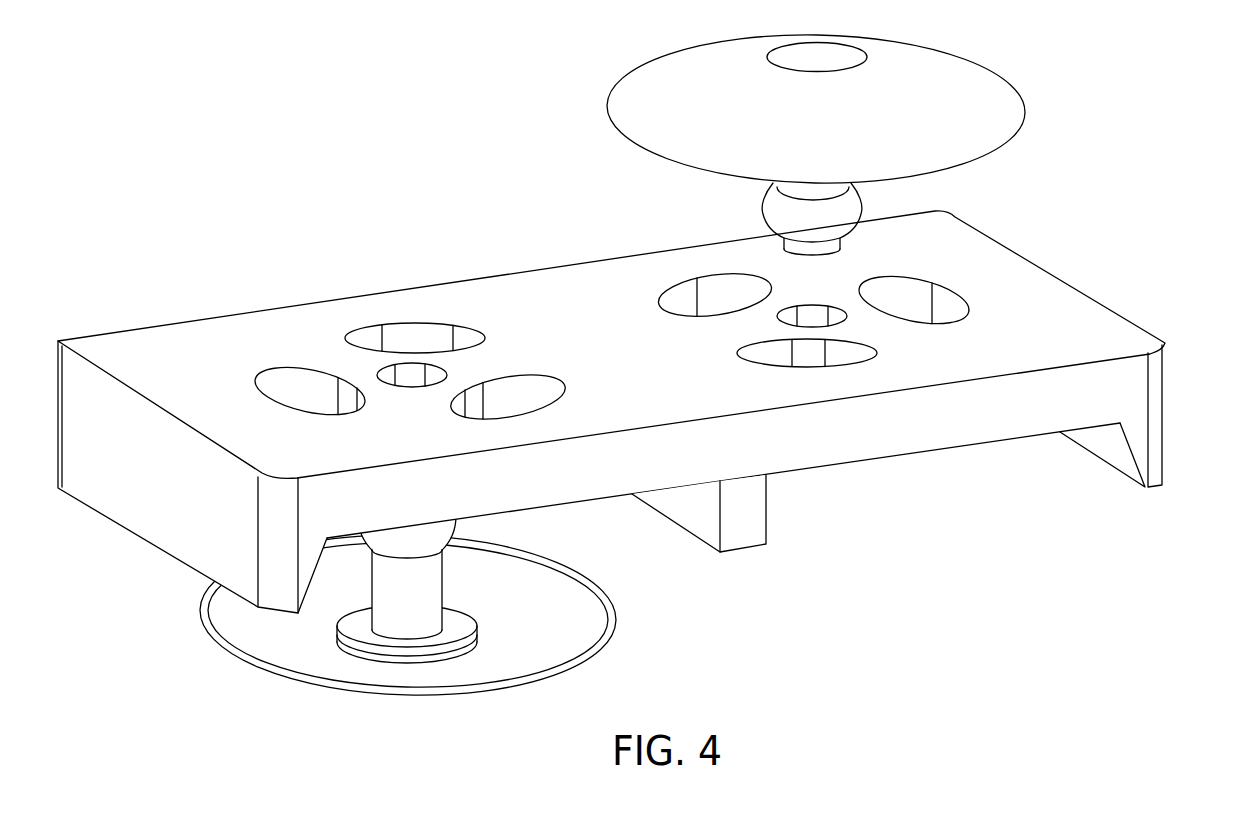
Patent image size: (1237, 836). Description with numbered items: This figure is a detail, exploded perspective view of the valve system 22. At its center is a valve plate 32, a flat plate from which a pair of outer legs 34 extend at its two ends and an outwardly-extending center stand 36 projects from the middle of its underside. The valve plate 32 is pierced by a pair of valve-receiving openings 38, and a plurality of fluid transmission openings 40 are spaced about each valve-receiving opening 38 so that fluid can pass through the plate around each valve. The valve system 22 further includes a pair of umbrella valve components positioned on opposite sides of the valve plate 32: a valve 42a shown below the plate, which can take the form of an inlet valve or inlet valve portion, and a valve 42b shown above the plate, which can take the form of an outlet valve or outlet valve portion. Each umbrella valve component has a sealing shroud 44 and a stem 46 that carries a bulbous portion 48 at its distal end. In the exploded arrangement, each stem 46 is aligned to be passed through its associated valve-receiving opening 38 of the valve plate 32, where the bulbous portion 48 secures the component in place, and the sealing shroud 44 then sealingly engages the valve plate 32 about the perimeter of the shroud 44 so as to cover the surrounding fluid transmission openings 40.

The valve system 22 is at (1112, 222).
The valve plate 32 is at (522, 282).
The outer legs 34 is at (150, 535).
The center stand 36 is at (765, 516).
The valve-receiving openings 38 is at (415, 381).
The fluid transmission openings 40 is at (474, 340).
The inlet valve 42a is at (628, 652).
The outlet valve 42b is at (917, 67).
The sealing shroud 44 is at (668, 77).
The stem 46 is at (812, 191).
The bulbous portion 48 is at (774, 212).